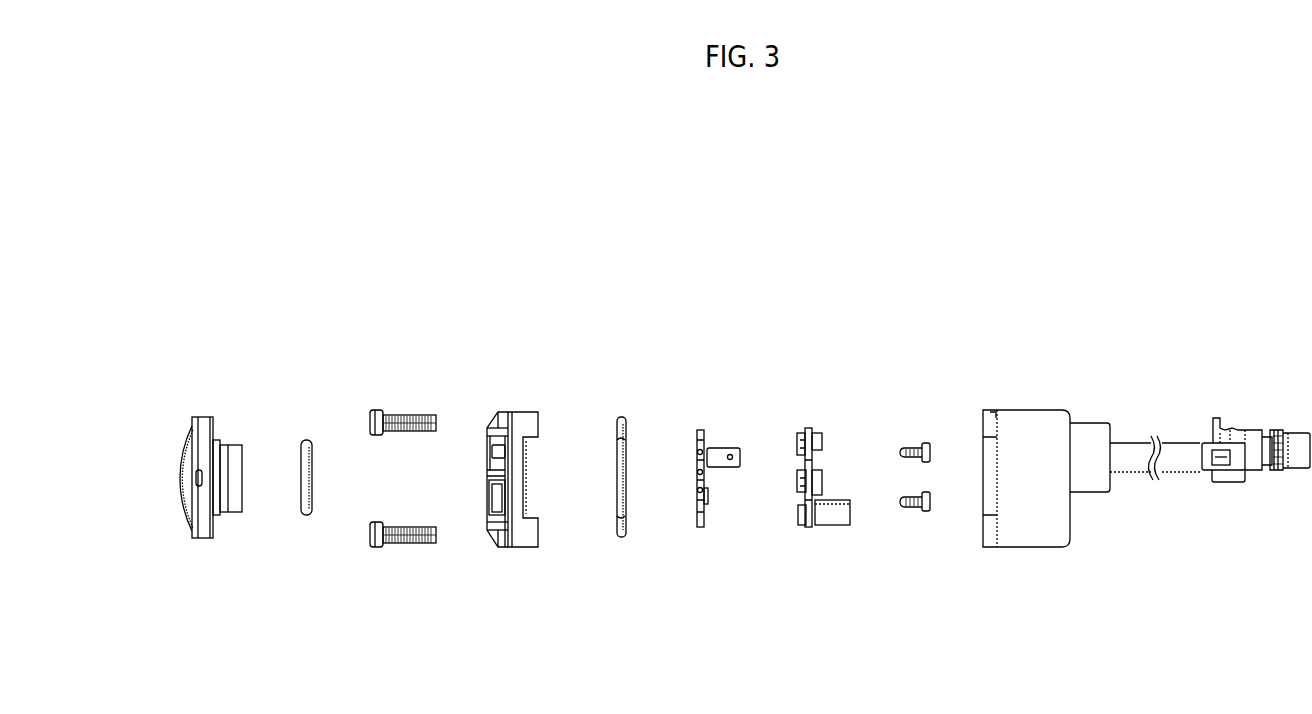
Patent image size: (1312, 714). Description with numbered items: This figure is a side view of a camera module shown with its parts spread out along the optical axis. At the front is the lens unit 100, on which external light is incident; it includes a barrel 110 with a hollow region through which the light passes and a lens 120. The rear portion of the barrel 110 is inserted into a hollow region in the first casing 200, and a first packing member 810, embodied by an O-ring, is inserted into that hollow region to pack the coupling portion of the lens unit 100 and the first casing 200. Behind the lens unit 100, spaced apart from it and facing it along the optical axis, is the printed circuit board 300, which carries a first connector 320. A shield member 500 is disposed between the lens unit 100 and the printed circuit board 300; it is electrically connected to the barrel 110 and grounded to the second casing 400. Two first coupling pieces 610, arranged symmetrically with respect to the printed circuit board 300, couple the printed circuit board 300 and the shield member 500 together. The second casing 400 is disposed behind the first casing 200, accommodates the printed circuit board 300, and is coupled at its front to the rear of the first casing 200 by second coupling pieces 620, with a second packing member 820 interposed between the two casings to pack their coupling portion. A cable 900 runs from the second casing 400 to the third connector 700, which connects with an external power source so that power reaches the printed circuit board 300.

The lens unit 100 is at (185, 547).
The barrel 110 is at (206, 528).
The lens 120 is at (183, 487).
The first packing member 810 is at (306, 517).
The second coupling piece 620 is at (392, 436).
The first casing 200 is at (524, 535).
The second packing member 820 is at (621, 540).
The shield member 500 is at (700, 530).
The printed circuit board 300 is at (803, 530).
The first connector 320 is at (838, 512).
The first coupling piece 610 is at (903, 499).
The second casing 400 is at (1032, 530).
The cable 900 is at (1136, 462).
The third connector 700 is at (1233, 483).